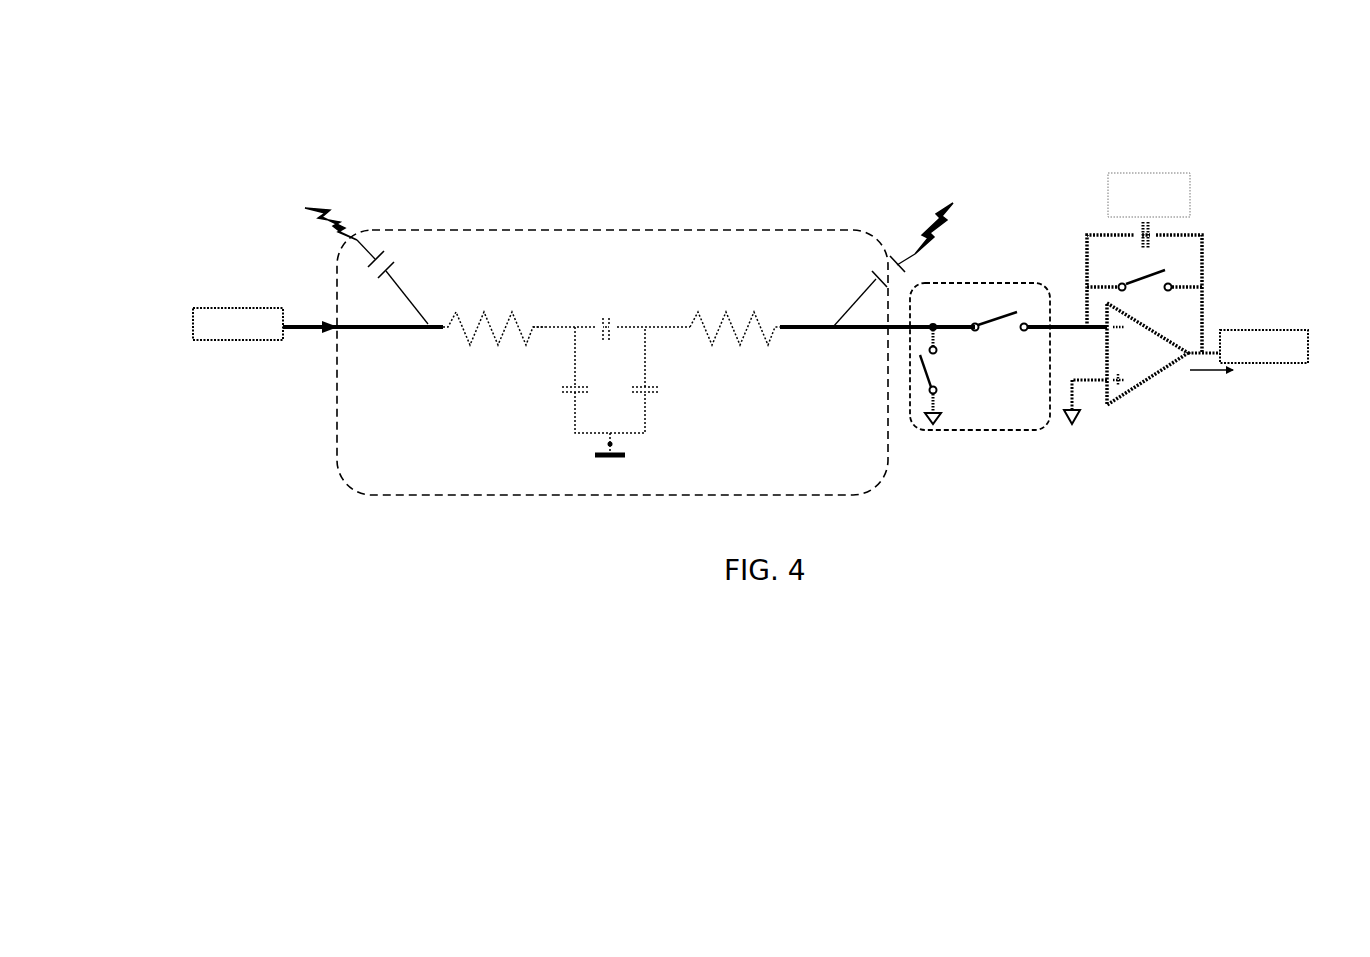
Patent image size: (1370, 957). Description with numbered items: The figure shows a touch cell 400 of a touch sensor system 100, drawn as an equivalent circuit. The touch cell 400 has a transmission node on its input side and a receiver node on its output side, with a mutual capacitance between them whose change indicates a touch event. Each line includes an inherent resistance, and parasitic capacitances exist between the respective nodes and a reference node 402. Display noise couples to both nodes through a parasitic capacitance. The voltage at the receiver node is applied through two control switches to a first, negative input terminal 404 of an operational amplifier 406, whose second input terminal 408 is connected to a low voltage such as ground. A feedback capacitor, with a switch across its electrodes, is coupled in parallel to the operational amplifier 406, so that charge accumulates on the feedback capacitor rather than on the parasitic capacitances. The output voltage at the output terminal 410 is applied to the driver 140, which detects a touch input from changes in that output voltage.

The touch sensor system 100 is at (873, 135).
The driver 140 is at (238, 307).
The touch cell 400 is at (522, 228).
The reference node 402 is at (597, 455).
The first input terminal 404 is at (1107, 330).
The operational amplifier 406 is at (1138, 385).
The second input terminal 408 is at (1105, 384).
The output terminal 410 is at (1203, 347).